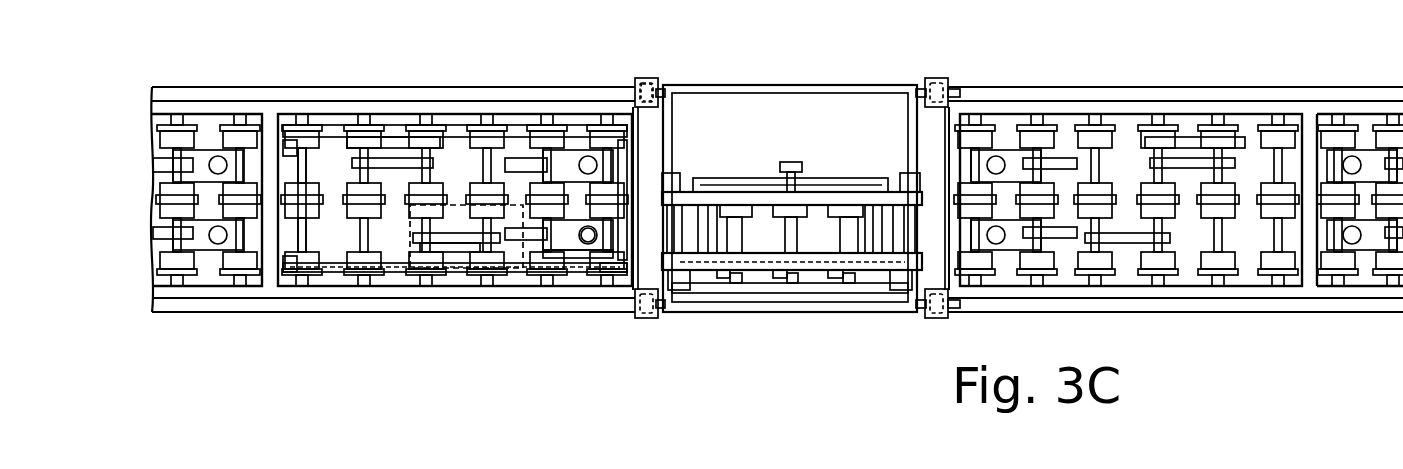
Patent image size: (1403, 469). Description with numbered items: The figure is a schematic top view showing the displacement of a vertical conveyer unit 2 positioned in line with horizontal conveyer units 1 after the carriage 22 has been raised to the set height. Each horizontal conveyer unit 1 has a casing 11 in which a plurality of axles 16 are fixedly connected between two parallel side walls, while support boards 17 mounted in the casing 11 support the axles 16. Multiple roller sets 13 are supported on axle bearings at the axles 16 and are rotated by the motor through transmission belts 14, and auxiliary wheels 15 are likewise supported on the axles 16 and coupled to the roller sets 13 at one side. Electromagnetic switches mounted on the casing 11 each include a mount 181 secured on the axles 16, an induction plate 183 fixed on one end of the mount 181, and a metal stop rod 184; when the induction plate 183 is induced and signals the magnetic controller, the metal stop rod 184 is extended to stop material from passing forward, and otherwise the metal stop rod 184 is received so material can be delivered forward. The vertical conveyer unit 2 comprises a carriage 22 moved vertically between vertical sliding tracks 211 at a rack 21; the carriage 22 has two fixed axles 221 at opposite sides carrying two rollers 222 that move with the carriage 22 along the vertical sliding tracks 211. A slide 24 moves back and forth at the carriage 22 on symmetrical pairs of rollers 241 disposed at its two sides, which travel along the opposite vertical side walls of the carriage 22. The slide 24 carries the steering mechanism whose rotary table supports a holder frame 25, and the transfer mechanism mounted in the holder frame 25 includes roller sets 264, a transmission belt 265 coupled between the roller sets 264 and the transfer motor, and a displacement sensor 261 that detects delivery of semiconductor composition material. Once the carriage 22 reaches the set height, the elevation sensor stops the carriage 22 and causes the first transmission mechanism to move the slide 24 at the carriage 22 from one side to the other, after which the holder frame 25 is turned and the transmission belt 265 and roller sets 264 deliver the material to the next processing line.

The horizontal conveyer unit 1 is at (375, 108).
The casing 11 is at (343, 286).
The roller set 13 is at (292, 278).
The transmission belt 14 is at (458, 130).
The auxiliary wheel 15 is at (610, 274).
The axle 16 is at (302, 162).
The support board 17 is at (430, 268).
The mount 181 is at (578, 242).
The induction plate 183 is at (540, 258).
The metal stop rod 184 is at (580, 157).
The vertical conveyer unit 2 is at (787, 83).
The rack 21 is at (937, 78).
The vertical sliding track 211 is at (948, 92).
The carriage 22 is at (850, 92).
The fixed axle 221 is at (655, 78).
The roller 222 is at (636, 82).
The slide 24 is at (710, 292).
The roller 241 is at (670, 183).
The holder frame 25 is at (751, 283).
The displacement sensor 261 is at (785, 162).
The roller set 264 is at (810, 205).
The transmission belt 265 is at (812, 264).